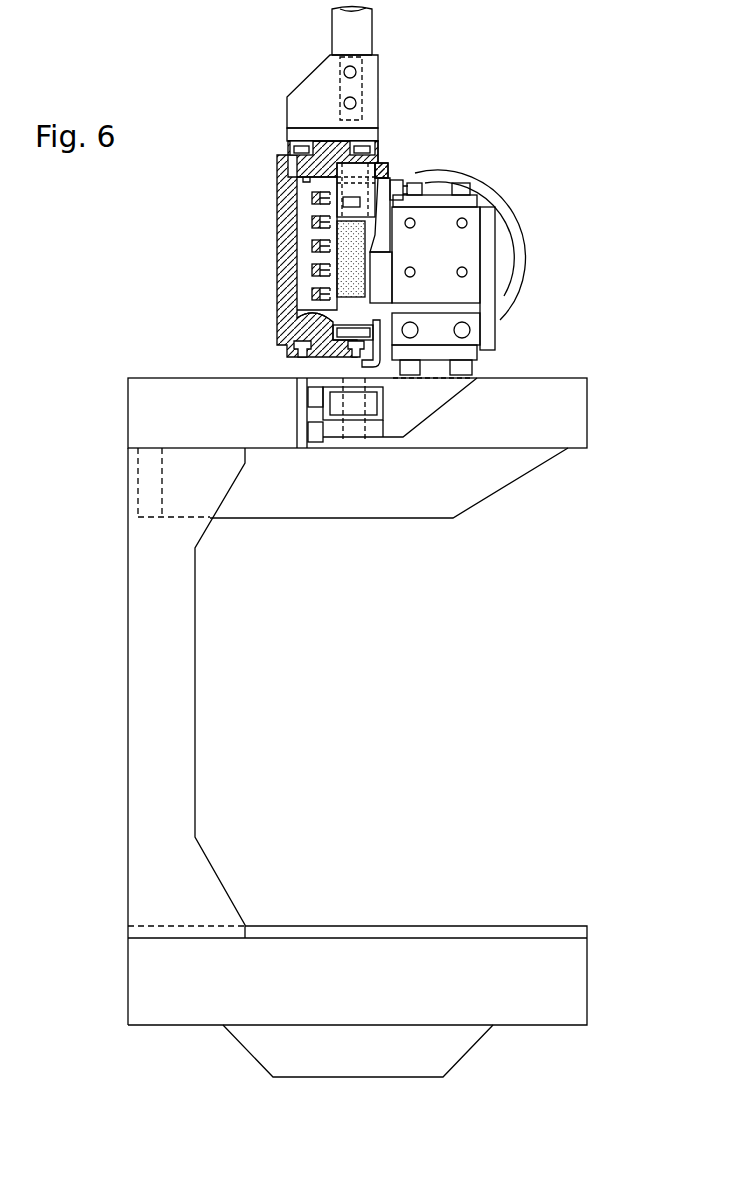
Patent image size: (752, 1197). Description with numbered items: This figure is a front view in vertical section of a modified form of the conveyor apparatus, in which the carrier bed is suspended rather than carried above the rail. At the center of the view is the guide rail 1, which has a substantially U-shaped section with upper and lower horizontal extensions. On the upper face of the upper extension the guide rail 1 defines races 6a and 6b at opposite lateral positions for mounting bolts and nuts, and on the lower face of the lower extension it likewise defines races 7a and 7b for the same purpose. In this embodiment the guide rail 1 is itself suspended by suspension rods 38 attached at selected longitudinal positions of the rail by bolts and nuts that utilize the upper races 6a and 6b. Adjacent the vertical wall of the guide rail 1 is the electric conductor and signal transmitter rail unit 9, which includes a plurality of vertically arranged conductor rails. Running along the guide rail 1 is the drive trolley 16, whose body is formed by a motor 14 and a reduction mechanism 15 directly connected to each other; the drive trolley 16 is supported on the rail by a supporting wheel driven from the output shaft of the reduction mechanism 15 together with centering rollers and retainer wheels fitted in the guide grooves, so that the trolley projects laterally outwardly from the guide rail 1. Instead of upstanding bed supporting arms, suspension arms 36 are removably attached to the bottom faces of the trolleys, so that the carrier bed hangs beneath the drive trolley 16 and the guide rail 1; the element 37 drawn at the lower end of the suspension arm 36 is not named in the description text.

The guide rail 1 is at (283, 212).
The race 6a is at (302, 140).
The race 6b is at (360, 140).
The race 7a is at (295, 352).
The race 7b is at (362, 350).
The electric conductor and signal transmitter rail unit 9 is at (336, 226).
The motor 14 is at (490, 192).
The reduction mechanism 15 is at (462, 245).
The drive trolley 16 is at (476, 268).
The suspension arm 36 is at (428, 402).
The base 37 is at (447, 960).
The suspension rod 38 is at (367, 30).